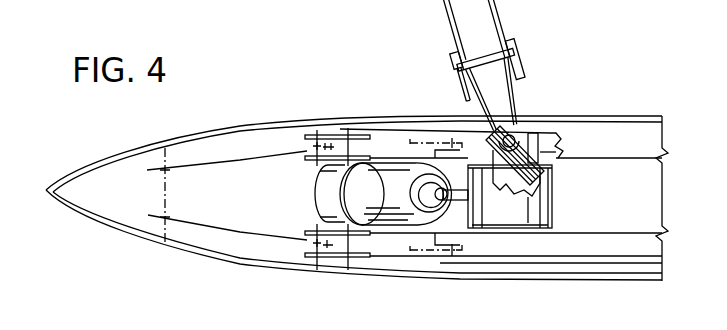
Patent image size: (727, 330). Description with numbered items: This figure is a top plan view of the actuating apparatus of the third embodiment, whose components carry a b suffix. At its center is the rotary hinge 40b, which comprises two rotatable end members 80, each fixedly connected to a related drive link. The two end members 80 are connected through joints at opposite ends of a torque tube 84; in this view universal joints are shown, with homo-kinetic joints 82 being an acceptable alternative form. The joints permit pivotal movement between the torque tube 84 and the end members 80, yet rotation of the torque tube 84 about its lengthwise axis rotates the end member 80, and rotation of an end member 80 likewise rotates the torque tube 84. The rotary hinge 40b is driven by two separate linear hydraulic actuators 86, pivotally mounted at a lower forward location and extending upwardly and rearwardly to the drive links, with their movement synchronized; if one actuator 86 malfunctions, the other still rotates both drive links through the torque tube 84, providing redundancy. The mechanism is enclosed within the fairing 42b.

The torque tube 84 is at (498, 12).
The homo-kinetic joint 82 is at (513, 137).
The linear hydraulic actuator 86 is at (382, 166).
The end member 80 is at (541, 208).
The rotary hinge 40b is at (530, 230).
The fairing 42b is at (295, 273).